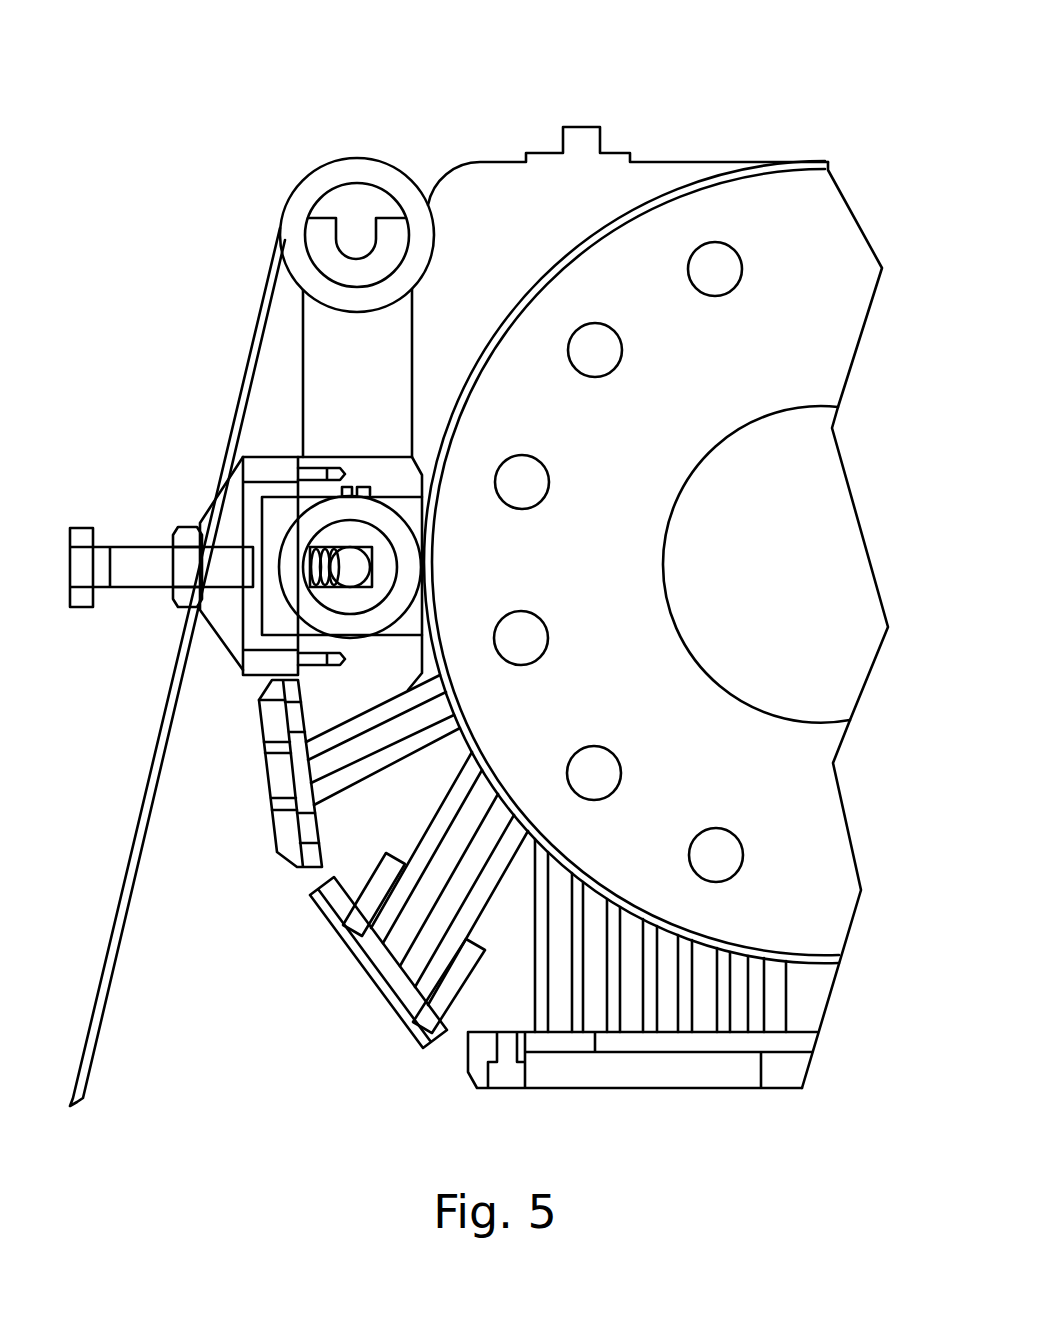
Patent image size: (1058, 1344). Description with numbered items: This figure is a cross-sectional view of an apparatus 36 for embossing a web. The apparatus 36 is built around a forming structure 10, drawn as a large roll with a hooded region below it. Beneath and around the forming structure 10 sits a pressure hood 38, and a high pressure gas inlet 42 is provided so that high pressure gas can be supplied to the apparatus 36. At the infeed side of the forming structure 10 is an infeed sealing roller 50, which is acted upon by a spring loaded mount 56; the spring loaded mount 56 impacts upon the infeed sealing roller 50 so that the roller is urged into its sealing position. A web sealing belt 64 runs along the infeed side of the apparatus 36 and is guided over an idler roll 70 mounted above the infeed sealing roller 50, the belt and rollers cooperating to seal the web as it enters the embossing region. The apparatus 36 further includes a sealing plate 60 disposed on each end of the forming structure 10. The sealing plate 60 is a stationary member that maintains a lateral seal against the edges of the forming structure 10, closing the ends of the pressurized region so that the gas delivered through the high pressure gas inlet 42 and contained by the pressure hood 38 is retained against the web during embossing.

The apparatus 36 is at (772, 76).
The forming structure 10 is at (833, 843).
The pressure hood 38 is at (510, 993).
The high pressure gas inlet 42 is at (373, 977).
The infeed sealing roller 50 is at (318, 530).
The spring loaded mount 56 is at (138, 562).
The sealing plate 60 is at (642, 185).
The web sealing belt 64 is at (143, 830).
The idler roll 70 is at (307, 190).